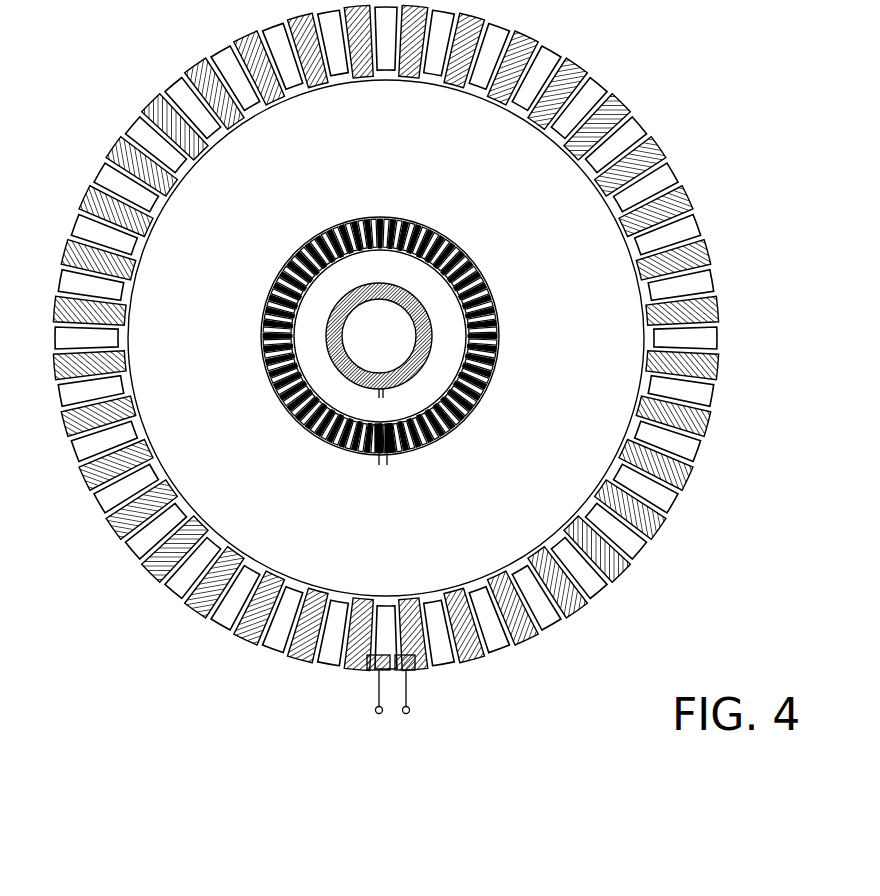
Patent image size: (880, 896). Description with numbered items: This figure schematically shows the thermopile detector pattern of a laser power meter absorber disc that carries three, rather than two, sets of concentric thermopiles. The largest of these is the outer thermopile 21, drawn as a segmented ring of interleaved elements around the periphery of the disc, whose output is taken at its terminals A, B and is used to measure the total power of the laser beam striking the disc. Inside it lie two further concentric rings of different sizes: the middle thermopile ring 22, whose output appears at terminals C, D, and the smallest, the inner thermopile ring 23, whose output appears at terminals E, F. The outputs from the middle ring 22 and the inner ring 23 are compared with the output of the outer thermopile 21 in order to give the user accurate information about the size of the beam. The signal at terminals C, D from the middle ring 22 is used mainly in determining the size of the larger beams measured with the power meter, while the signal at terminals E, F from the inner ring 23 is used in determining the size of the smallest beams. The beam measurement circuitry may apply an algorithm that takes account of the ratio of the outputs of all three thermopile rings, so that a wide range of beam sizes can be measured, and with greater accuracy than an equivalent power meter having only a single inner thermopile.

The outer thermopile 21 is at (677, 178).
The middle thermopile ring 22 is at (261, 357).
The inner thermopile ring 23 is at (351, 287).
The output terminal A is at (370, 710).
The output terminal B is at (418, 710).
The output terminal C is at (368, 469).
The output terminal D is at (397, 469).
The output terminal E is at (371, 404).
The output terminal F is at (390, 404).